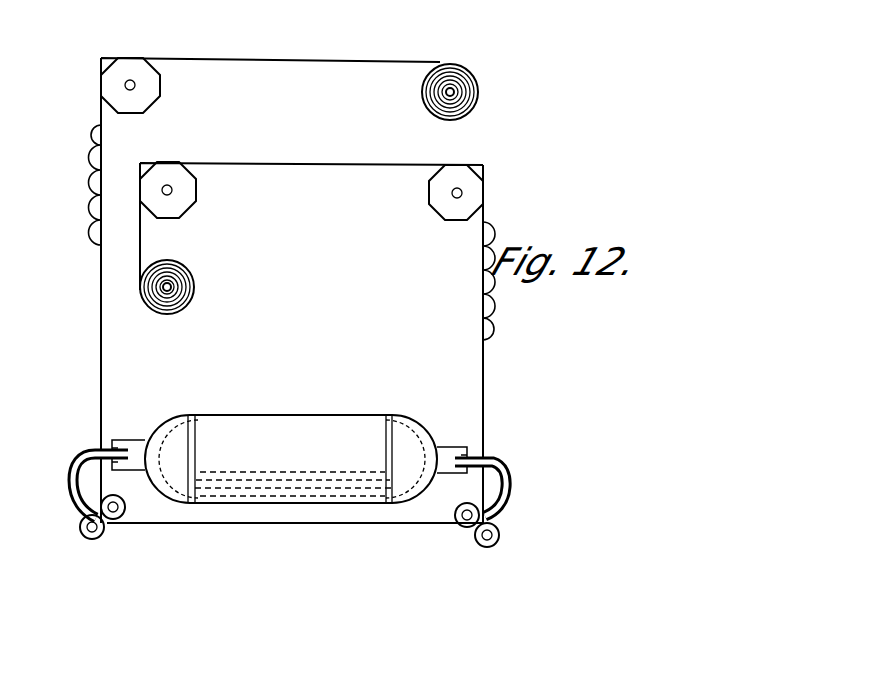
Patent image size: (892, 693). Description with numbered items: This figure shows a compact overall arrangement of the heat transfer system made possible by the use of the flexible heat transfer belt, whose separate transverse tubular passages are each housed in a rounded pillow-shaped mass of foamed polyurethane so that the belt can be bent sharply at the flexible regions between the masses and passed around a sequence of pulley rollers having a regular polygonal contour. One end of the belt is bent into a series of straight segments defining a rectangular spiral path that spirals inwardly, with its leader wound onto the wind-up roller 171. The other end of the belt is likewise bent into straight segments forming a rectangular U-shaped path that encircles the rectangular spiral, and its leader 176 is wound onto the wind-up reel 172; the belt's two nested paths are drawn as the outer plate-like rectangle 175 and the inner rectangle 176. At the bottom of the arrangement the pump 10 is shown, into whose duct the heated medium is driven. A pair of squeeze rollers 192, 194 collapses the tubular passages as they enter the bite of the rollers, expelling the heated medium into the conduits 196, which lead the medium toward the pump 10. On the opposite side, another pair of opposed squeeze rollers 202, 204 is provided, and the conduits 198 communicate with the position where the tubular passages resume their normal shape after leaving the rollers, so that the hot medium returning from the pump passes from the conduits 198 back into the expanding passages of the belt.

The pump 10 is at (330, 448).
The wind-up roller 171 is at (472, 112).
The wind-up reel 172 is at (190, 302).
The outer plate 175 is at (322, 61).
The leader 176 is at (278, 163).
The squeeze roller 192 is at (126, 508).
The squeeze roller 194 is at (90, 540).
The conduit 196 is at (70, 463).
The conduit 198 is at (508, 490).
The squeeze roller 202 is at (456, 510).
The squeeze roller 204 is at (486, 548).